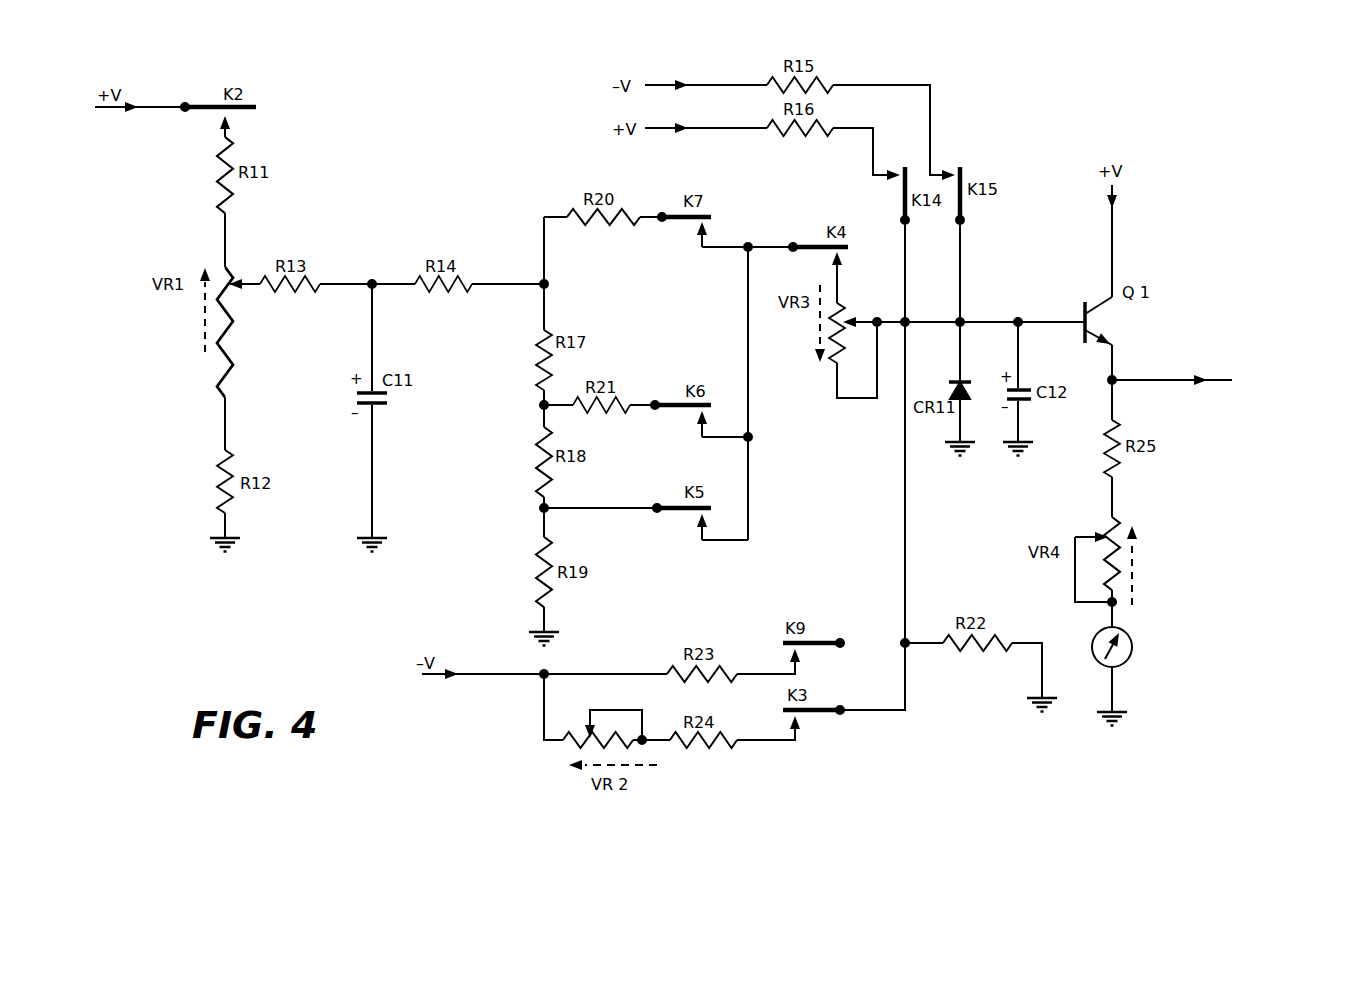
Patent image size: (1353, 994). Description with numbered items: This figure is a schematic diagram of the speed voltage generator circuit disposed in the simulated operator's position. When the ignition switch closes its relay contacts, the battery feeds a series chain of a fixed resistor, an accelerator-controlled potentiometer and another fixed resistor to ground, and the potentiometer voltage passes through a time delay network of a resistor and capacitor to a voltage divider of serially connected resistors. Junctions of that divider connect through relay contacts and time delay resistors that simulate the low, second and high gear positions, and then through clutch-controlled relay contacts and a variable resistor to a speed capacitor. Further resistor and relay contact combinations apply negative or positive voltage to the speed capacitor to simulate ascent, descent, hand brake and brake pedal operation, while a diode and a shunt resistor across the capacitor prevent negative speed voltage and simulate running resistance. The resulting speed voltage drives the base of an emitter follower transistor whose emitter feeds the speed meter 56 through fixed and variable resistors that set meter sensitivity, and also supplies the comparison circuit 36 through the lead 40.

The lead 40 is at (1148, 380).
The speed meter 56 is at (1134, 651).
The comparison circuit 36 is at (1270, 380).